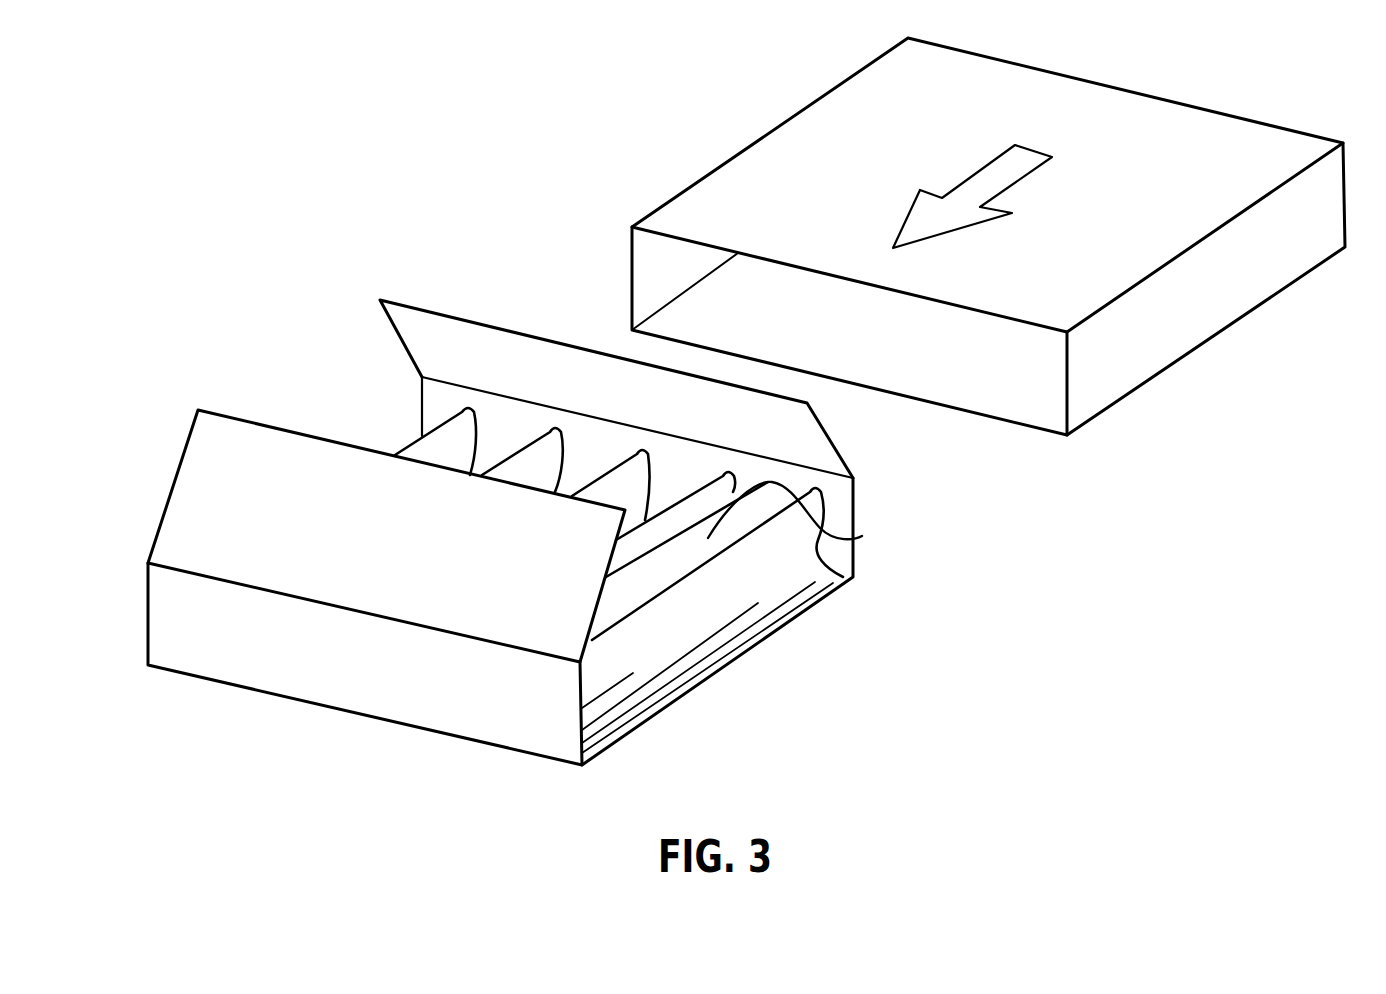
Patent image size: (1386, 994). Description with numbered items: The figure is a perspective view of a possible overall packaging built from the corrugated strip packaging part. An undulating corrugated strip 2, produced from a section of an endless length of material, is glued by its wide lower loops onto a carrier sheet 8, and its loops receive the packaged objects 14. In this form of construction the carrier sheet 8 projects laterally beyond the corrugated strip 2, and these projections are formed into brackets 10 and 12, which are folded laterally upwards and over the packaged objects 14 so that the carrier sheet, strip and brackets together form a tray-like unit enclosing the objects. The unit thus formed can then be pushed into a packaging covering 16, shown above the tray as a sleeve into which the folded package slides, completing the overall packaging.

The serpentine divider strip 2 is at (438, 448).
The stack of articles 8 is at (623, 722).
The tray 10 is at (389, 682).
The flap 12 is at (423, 562).
The flexible strip 14 is at (862, 536).
The sleeve 16 is at (1198, 317).